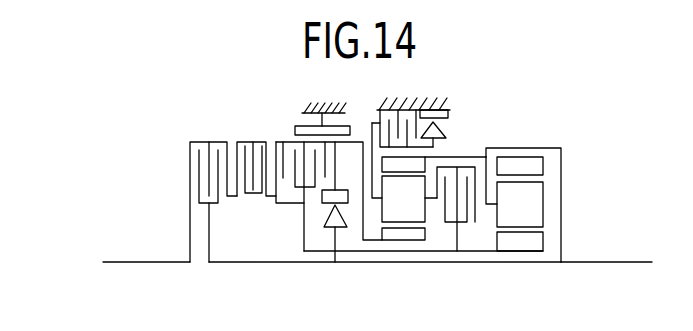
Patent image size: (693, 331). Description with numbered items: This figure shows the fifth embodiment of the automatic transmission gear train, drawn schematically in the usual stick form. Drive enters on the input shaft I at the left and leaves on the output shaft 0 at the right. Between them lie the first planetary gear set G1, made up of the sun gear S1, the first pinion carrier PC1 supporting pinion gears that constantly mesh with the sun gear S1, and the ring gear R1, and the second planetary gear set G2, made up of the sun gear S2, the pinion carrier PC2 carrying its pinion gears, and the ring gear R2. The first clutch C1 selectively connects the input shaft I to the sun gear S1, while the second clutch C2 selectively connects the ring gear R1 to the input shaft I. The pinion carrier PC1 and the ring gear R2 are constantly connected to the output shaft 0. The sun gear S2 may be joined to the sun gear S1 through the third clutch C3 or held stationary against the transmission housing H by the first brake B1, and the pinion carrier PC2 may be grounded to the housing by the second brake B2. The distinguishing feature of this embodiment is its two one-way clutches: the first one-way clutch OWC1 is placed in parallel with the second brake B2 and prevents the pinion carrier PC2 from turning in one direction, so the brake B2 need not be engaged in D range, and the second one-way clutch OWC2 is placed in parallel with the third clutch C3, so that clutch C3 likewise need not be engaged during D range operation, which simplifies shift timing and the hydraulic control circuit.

The input shaft I is at (125, 262).
The output shaft 0 is at (635, 262).
The first clutch C1 is at (245, 140).
The second clutch C2 is at (187, 151).
The third clutch C3 is at (288, 140).
The first brake B1 is at (293, 128).
The second brake B2 is at (376, 112).
The transmission housing H is at (425, 100).
The first one-way clutch OWC1 is at (443, 132).
The second one-way clutch OWC2 is at (331, 229).
The first planetary gear set G1 is at (589, 195).
The ring gear R1 is at (538, 163).
The first pinion carrier PC1 is at (527, 200).
The sun gear S1 is at (538, 242).
The second planetary gear set G2 is at (427, 239).
The ring gear R2 is at (393, 163).
The pinion carrier PC2 is at (410, 193).
The sun gear S2 is at (393, 259).